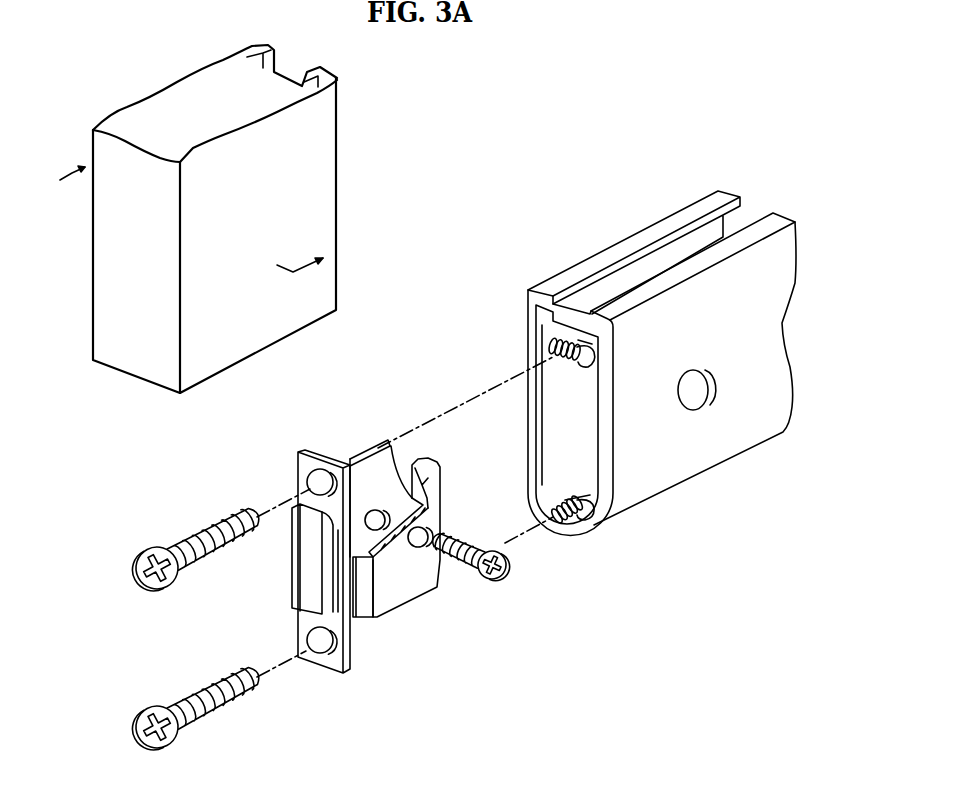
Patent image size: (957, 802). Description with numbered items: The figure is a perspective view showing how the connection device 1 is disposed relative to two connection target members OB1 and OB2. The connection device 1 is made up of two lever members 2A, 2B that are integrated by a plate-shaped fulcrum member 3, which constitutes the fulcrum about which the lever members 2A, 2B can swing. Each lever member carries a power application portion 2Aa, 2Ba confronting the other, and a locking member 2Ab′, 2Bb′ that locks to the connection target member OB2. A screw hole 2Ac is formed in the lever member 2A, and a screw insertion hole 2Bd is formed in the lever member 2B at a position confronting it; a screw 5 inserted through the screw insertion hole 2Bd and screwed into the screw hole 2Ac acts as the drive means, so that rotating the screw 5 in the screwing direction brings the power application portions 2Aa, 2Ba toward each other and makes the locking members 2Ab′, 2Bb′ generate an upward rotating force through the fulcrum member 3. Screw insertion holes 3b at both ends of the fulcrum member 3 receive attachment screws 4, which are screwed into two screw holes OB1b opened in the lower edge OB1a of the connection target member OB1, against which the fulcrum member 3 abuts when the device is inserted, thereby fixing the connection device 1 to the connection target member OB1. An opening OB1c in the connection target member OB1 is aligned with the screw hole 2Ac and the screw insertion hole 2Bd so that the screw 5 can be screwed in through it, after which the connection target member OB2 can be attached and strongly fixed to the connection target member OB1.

The connection device 1 is at (331, 598).
The lever member 2A is at (329, 504).
The power application portion 2Aa is at (363, 455).
The locking member 2Ab′ is at (296, 540).
The screw hole 2Ac is at (382, 512).
The lever member 2B is at (356, 564).
The power application portion 2Ba is at (388, 610).
The locking member 2Bb′ is at (332, 588).
The screw insertion hole 2Bd is at (432, 586).
The fulcrum member 3 is at (300, 586).
The screw insertion holes 3b is at (306, 484).
The attachment screws 4 is at (158, 592).
The screw 5 is at (503, 578).
The connection target member OB1 is at (591, 383).
The lower edge OB1a is at (606, 450).
The screw holes OB1b is at (548, 353).
The opening OB1c is at (712, 408).
The connection target member OB2 is at (136, 367).